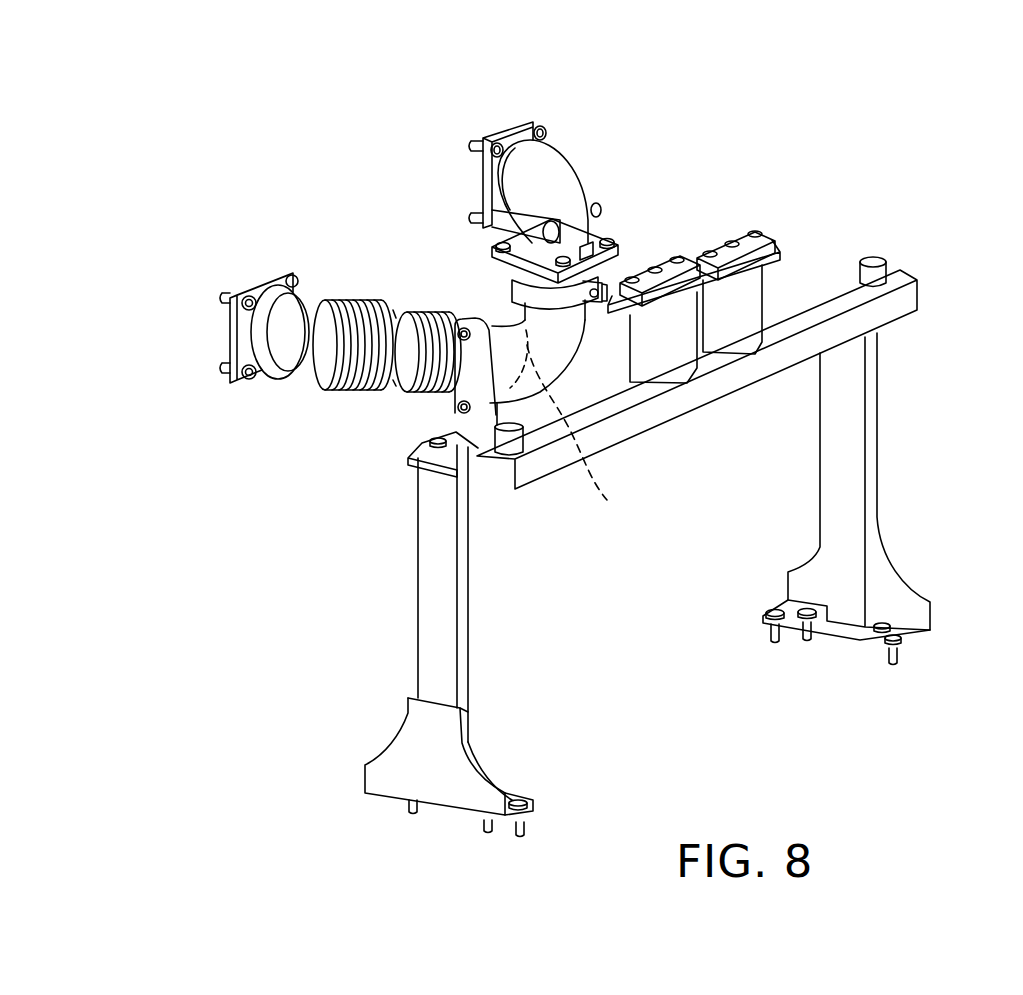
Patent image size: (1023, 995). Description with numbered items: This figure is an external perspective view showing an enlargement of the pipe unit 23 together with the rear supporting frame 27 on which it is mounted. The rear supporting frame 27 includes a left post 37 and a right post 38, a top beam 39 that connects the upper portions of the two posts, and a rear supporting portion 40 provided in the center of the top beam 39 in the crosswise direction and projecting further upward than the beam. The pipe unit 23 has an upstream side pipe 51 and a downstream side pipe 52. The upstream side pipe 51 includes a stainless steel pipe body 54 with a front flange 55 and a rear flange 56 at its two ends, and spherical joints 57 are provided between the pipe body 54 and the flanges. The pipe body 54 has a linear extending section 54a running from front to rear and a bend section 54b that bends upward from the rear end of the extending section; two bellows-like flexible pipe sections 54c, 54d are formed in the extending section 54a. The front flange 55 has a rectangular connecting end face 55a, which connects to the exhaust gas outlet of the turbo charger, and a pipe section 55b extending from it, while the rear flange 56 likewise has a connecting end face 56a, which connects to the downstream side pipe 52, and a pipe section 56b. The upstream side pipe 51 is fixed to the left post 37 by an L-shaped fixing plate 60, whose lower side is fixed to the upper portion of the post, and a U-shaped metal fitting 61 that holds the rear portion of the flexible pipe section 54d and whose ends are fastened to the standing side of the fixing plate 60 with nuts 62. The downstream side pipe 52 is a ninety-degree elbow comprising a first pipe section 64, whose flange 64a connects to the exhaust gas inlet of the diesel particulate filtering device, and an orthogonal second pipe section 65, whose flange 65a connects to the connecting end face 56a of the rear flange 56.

The pipe unit 23 is at (690, 174).
The rear supporting frame 27 is at (905, 243).
The left post 37 is at (420, 608).
The right post 38 is at (872, 460).
The top beam 39 is at (735, 380).
The rear supporting portion 40 is at (790, 248).
The upstream side pipe 51 is at (325, 402).
The downstream side pipe 52 is at (590, 165).
The pipe body 54 is at (453, 350).
The linear extending section 54a is at (386, 299).
The bend section 54b is at (560, 353).
The flexible pipe section 54c is at (333, 357).
The flexible pipe section 54d is at (417, 400).
The front flange 55 is at (210, 291).
The connecting end face 55a is at (235, 330).
The pipe section 55b is at (258, 282).
The rear flange 56 is at (542, 256).
The connecting end face 56a is at (490, 266).
The pipe section 56b is at (512, 295).
The spherical joint 57 is at (318, 296).
The fixing plate 60 is at (500, 400).
The U-shaped metal fitting 61 is at (585, 441).
The nut 62 is at (465, 440).
The first pipe section 64 is at (556, 160).
The flange 64a is at (495, 135).
The second pipe section 65 is at (575, 232).
The flange 65a is at (540, 222).